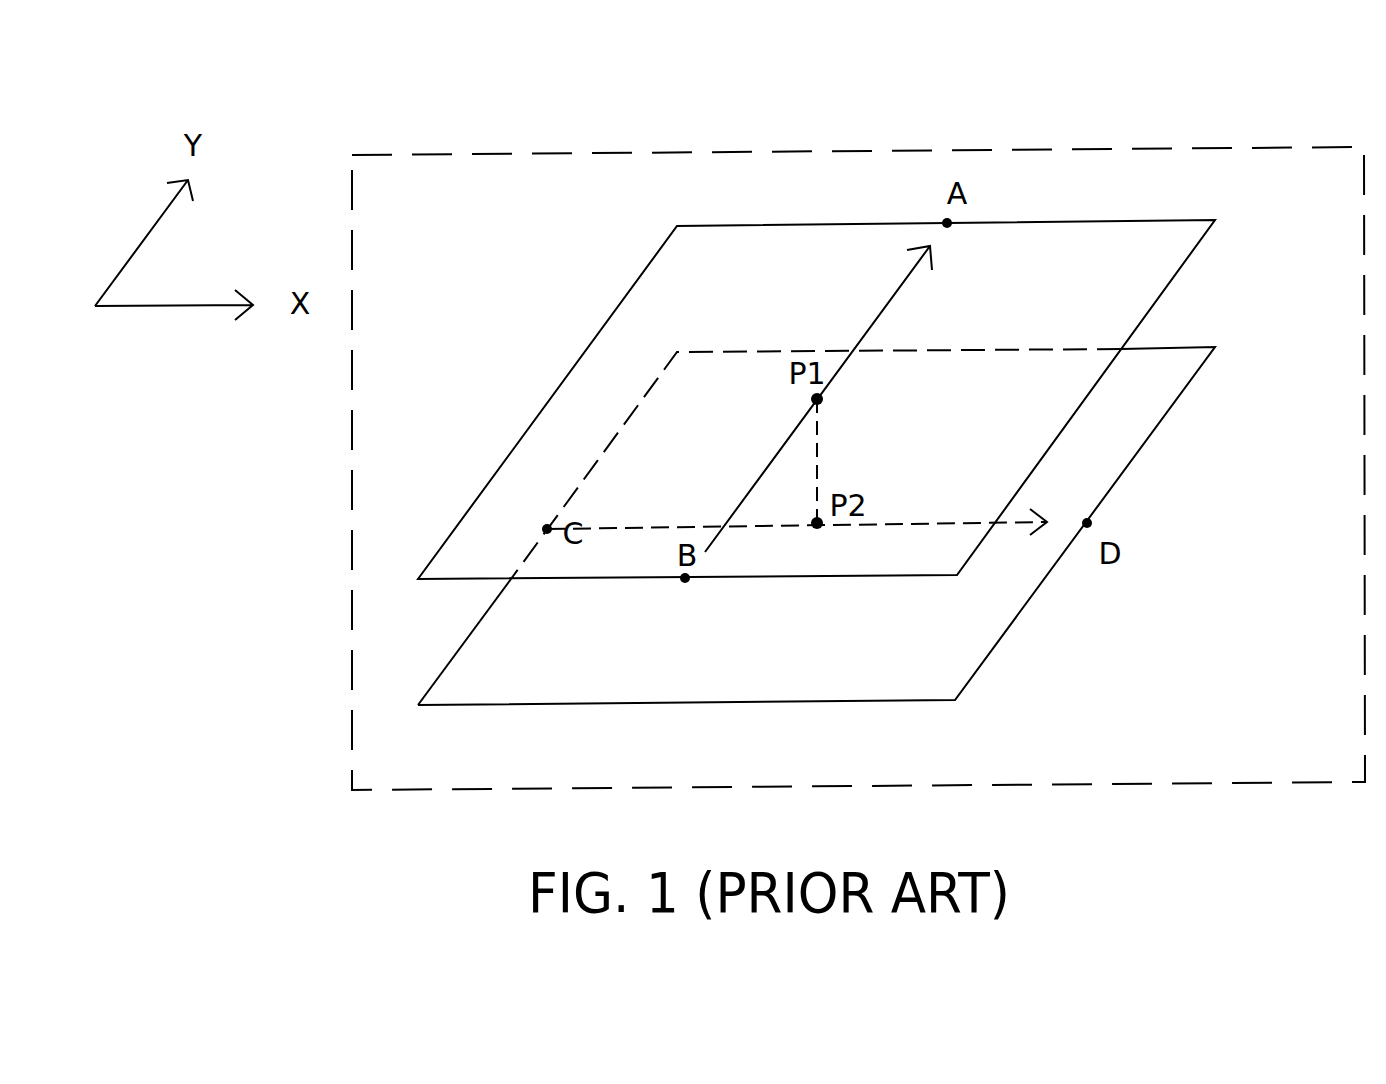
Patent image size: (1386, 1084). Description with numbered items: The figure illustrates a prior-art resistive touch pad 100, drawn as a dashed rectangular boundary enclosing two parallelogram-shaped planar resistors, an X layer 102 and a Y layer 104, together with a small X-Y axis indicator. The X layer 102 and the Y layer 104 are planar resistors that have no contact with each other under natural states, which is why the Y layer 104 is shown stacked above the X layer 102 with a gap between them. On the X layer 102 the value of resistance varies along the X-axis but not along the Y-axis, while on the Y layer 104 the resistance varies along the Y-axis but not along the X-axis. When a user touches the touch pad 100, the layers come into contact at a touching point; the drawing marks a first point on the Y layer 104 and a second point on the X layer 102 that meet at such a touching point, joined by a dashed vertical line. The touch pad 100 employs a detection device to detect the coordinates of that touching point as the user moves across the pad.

The touch pad 100 is at (677, 150).
The X layer 102 is at (1185, 390).
The Y layer 104 is at (1195, 252).